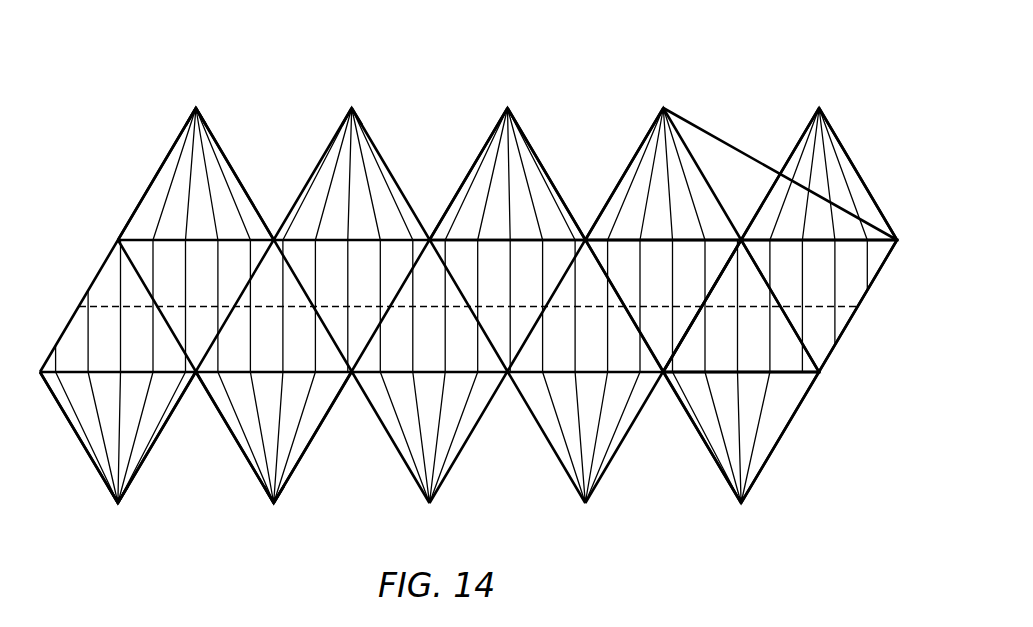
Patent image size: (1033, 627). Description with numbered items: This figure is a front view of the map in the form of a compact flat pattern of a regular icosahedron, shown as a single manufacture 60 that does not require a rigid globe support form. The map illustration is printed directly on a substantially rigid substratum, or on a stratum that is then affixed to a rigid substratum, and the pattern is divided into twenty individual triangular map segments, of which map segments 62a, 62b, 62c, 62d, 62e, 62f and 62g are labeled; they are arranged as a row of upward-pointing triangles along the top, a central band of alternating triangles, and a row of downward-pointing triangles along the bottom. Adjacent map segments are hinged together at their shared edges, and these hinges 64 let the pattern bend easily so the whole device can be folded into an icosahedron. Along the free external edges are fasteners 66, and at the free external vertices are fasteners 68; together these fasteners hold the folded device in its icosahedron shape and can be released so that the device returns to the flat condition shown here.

The single manufacture 60 is at (115, 160).
The map segment 62a is at (687, 140).
The map segment 62b is at (837, 147).
The map segment 62c is at (628, 247).
The map segment 62d is at (823, 339).
The map segment 62e is at (783, 365).
The map segment 62f is at (773, 440).
The map segment 62g is at (482, 152).
The hinges 64 is at (230, 238).
The fasteners 66 is at (168, 152).
The fasteners 68 is at (196, 108).